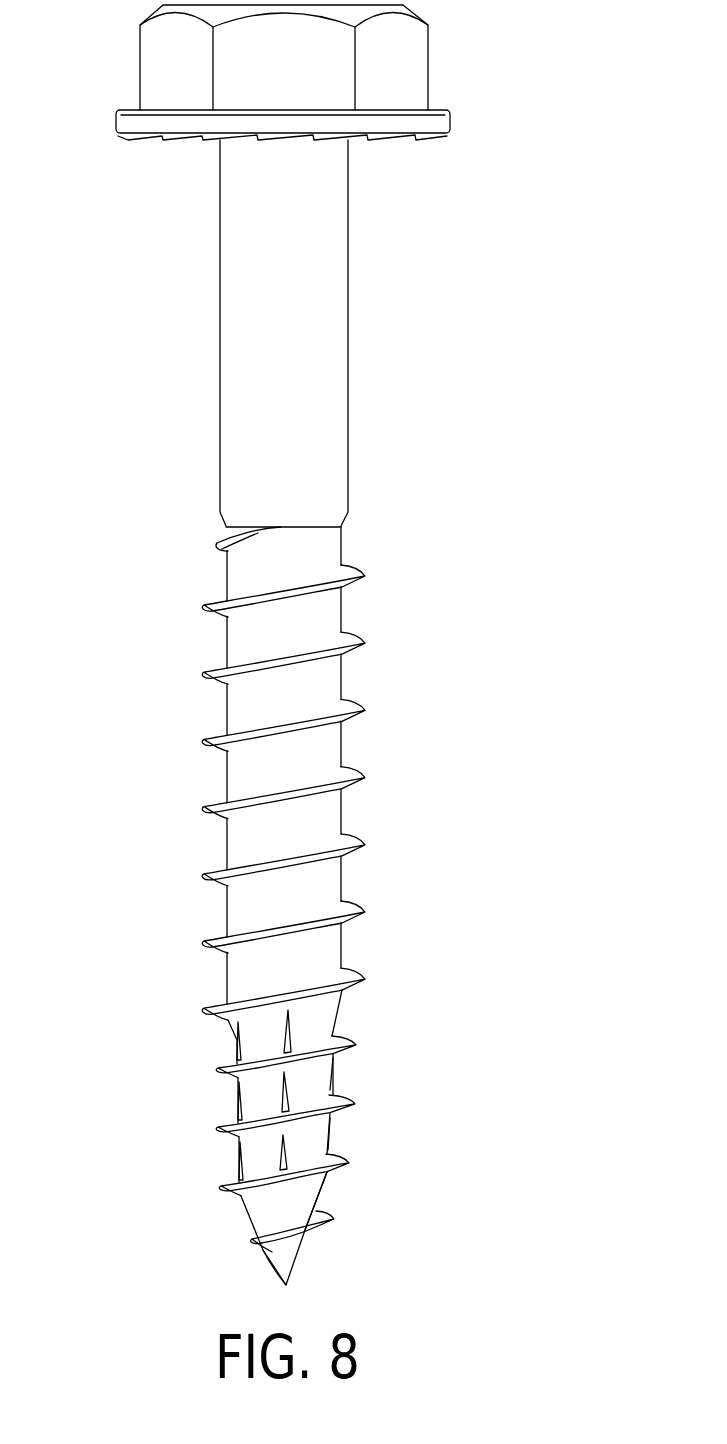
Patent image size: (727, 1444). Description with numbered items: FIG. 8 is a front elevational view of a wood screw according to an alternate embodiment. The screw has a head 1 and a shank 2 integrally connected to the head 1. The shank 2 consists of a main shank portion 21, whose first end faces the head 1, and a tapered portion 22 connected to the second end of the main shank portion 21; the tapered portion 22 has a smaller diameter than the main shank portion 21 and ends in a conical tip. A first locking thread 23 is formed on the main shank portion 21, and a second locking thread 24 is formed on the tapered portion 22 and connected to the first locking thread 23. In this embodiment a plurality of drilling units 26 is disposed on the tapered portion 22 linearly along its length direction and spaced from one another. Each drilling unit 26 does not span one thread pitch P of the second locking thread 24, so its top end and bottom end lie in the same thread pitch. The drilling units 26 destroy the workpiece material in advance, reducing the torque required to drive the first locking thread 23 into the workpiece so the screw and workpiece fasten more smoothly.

The head 1 is at (410, 65).
The shank 2 is at (200, 563).
The main shank portion 21 is at (320, 692).
The tapered portion 22 is at (307, 1086).
The first locking thread 23 is at (224, 810).
The second locking thread 24 is at (230, 1135).
The drilling units 26 is at (280, 1157).
The thread pitch P is at (350, 1104).